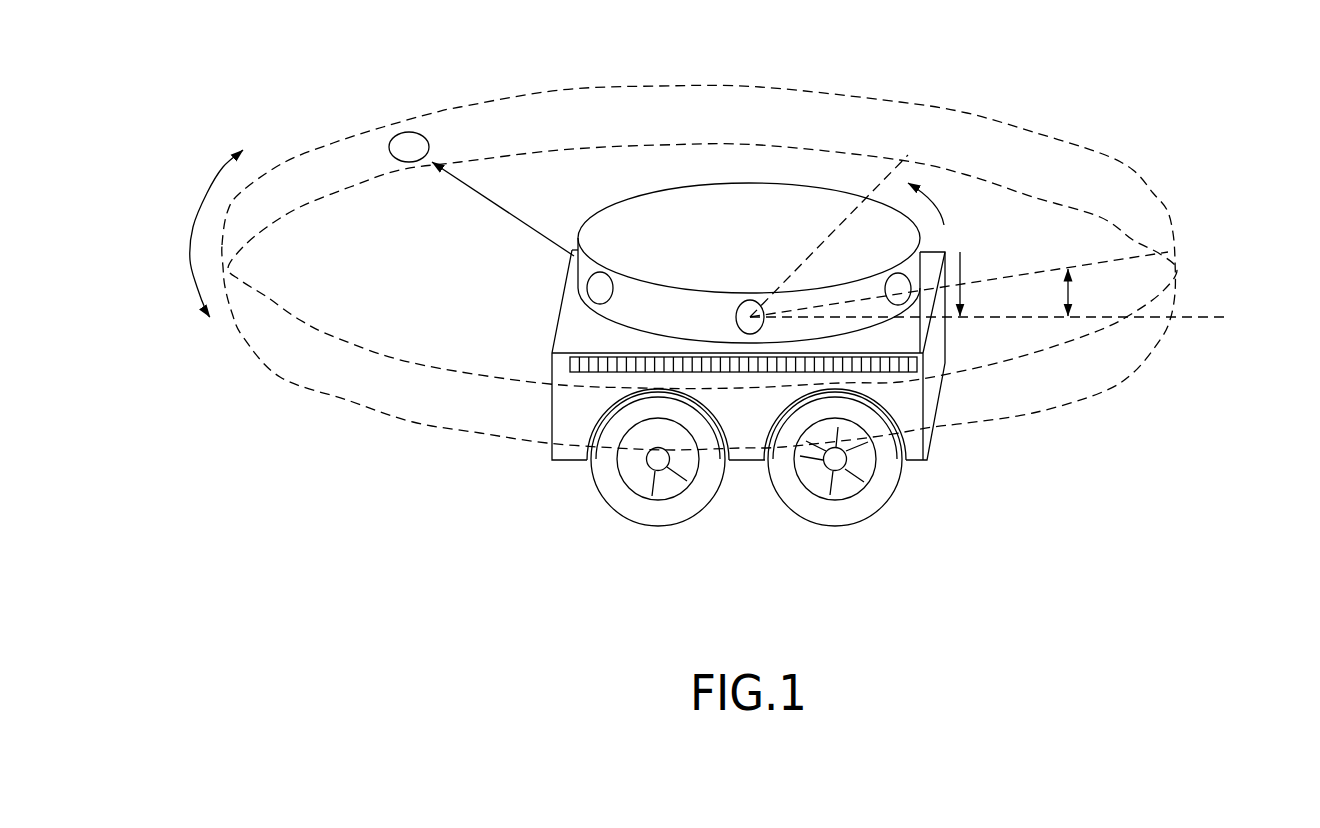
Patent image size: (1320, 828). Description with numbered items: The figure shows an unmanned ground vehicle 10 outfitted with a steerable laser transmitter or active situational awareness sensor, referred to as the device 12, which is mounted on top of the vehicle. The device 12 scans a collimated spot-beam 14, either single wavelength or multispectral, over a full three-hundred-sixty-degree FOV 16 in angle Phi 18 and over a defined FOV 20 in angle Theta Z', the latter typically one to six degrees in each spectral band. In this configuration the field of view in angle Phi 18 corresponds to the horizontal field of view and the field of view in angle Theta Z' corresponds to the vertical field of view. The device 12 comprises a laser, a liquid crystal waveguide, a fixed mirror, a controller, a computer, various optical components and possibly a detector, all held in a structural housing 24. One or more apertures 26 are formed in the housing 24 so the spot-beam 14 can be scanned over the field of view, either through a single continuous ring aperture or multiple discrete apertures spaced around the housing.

The unmanned ground vehicle 10 is at (524, 511).
The steerable laser transmitter or active situational awareness sensor 12 is at (642, 177).
The collimated spot-beam 14 is at (399, 134).
The 360° FOV 16 is at (192, 233).
The angle Phi 18 is at (960, 262).
The defined FOV 20 is at (418, 363).
The structural housing 24 is at (906, 184).
The aperture 26 is at (1100, 259).